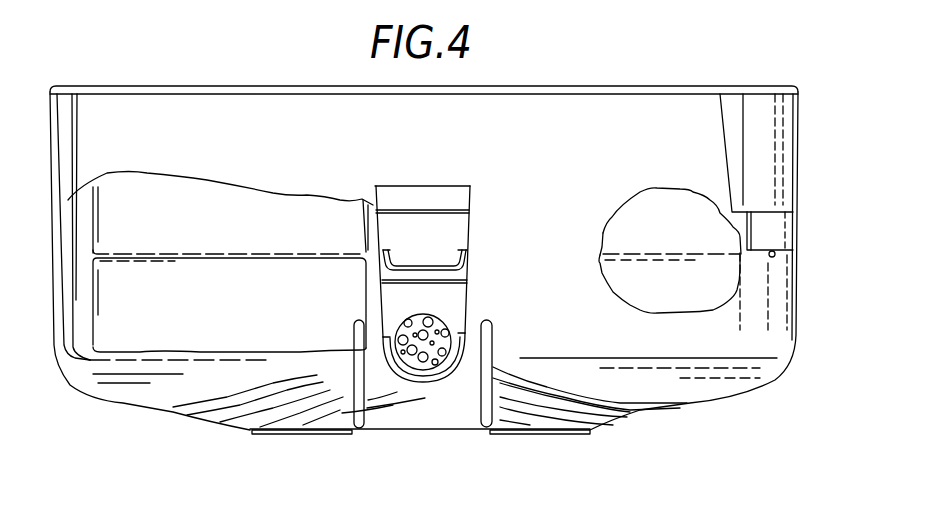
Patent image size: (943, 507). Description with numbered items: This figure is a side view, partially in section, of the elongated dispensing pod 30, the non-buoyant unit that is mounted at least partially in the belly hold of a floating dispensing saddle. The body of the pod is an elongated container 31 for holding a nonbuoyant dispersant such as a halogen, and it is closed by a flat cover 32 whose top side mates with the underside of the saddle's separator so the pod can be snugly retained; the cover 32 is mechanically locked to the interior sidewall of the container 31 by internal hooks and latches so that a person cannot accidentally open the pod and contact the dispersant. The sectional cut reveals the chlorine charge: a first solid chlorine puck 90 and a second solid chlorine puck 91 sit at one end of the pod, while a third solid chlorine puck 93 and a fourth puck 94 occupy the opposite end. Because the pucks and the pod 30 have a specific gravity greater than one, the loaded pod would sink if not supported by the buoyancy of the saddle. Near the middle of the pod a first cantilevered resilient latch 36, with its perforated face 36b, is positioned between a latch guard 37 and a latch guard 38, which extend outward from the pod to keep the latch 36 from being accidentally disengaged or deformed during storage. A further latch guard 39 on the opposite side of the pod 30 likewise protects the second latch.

The dispensing pod 30 is at (556, 84).
The elongated container 31 is at (82, 108).
The cover 32 is at (183, 85).
The cantilevered resilient latch 36 is at (460, 228).
The perforated inlet plate 36b is at (432, 355).
The latch guard 37 is at (352, 380).
The latch guard 38 is at (490, 333).
The latch guard 39 is at (777, 215).
The first solid chlorine puck 90 is at (225, 285).
The second solid chlorine puck 91 is at (137, 205).
The third solid chlorine puck 93 is at (640, 278).
The upper float body 94 is at (640, 215).